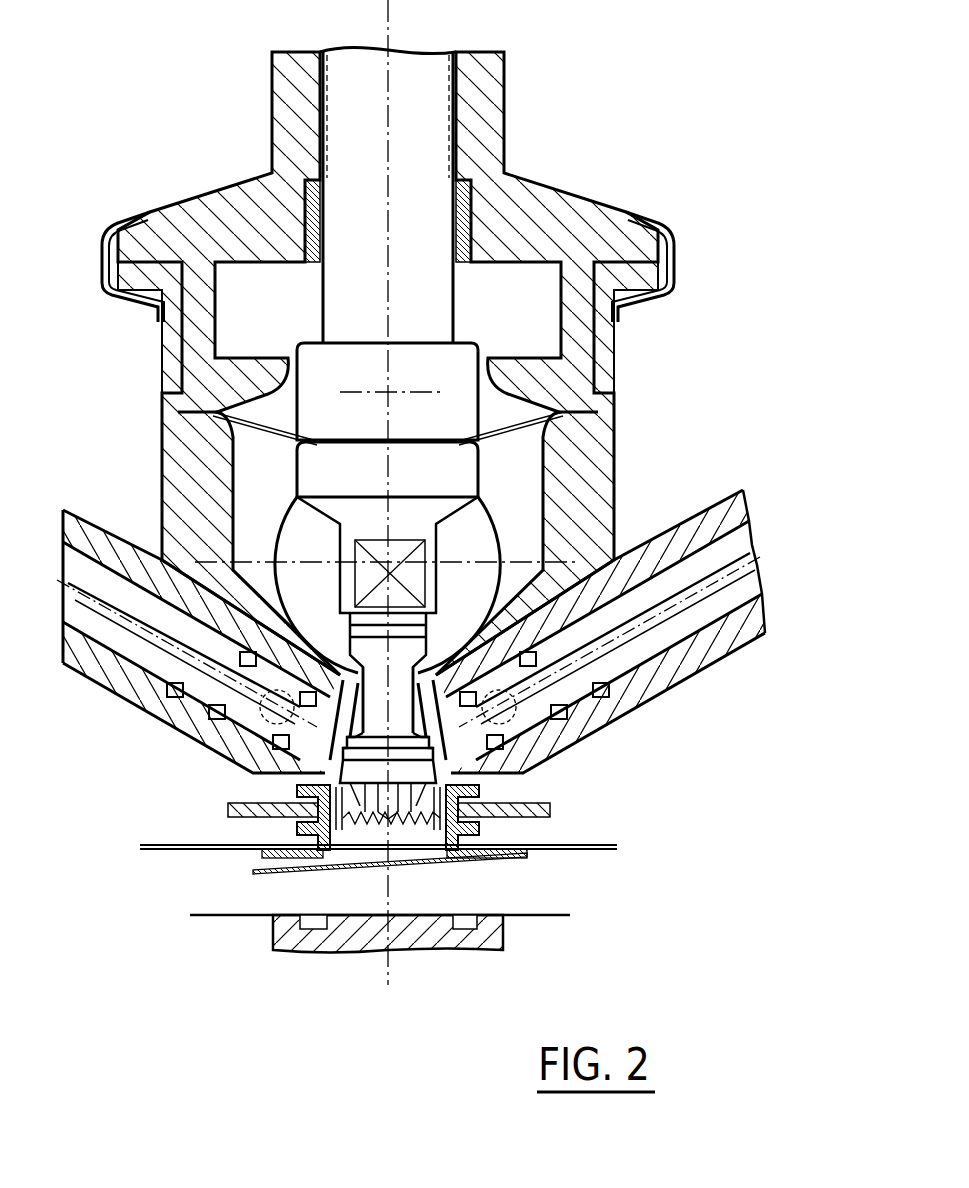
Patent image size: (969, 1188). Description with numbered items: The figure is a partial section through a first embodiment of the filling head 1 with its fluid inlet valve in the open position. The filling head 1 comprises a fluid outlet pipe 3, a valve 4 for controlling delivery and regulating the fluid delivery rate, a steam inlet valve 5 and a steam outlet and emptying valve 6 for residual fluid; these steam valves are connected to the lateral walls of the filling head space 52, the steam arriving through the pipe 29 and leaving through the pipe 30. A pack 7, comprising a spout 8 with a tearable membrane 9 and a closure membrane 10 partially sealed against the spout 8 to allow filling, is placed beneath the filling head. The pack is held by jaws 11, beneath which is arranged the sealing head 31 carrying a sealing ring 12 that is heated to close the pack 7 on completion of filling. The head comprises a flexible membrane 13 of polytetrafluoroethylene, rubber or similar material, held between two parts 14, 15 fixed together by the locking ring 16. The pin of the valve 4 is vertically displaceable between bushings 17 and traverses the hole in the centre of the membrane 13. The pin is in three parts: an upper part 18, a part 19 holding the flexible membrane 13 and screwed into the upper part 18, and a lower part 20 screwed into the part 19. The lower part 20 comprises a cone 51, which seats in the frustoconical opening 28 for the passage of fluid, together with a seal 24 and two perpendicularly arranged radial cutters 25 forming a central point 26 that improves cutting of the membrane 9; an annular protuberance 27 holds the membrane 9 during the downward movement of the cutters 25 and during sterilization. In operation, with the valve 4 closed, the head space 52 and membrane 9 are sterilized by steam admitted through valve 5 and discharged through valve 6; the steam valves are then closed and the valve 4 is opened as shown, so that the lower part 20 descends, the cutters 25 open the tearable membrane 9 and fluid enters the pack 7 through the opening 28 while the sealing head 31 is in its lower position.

The filling head 1 is at (630, 446).
The fluid outlet pipe 3 is at (387, 585).
The valve 4 is at (433, 548).
The steam inlet valve 5 is at (83, 577).
The steam outlet and emptying valve 6 is at (697, 577).
The pack 7 is at (553, 917).
The spout 8 is at (473, 828).
The tearable membrane 9 is at (335, 830).
The closure membrane 10 is at (253, 870).
The jaws 11 is at (550, 805).
The sealing ring 12 is at (467, 923).
The flexible membrane 13 is at (252, 423).
The part 14 is at (540, 205).
The part 15 is at (605, 332).
The locking ring 16 is at (655, 218).
The bushings 17 is at (460, 200).
The upper part 18 is at (418, 105).
The part holding the flexible membrane 19 is at (468, 467).
The lower part 20 is at (415, 650).
The seal 24 is at (440, 752).
The radial cutters 25 is at (323, 800).
The central point 26 is at (317, 823).
The annular protuberance 27 is at (457, 780).
The opening 28 is at (437, 699).
The pipe 29 is at (290, 724).
The pipe 30 is at (640, 728).
The sealing head 31 is at (323, 937).
The cone 51 is at (410, 751).
The filling head space 52 is at (355, 706).